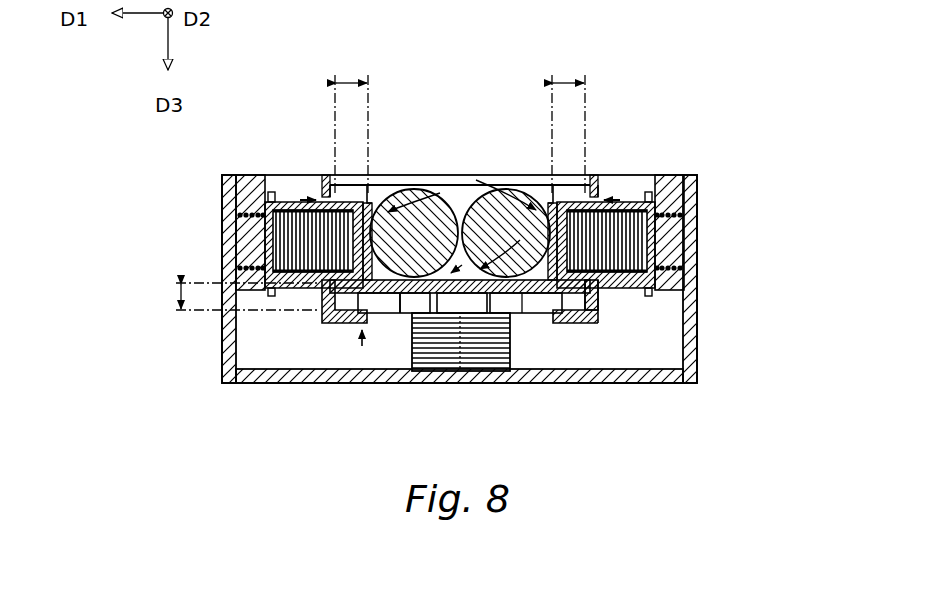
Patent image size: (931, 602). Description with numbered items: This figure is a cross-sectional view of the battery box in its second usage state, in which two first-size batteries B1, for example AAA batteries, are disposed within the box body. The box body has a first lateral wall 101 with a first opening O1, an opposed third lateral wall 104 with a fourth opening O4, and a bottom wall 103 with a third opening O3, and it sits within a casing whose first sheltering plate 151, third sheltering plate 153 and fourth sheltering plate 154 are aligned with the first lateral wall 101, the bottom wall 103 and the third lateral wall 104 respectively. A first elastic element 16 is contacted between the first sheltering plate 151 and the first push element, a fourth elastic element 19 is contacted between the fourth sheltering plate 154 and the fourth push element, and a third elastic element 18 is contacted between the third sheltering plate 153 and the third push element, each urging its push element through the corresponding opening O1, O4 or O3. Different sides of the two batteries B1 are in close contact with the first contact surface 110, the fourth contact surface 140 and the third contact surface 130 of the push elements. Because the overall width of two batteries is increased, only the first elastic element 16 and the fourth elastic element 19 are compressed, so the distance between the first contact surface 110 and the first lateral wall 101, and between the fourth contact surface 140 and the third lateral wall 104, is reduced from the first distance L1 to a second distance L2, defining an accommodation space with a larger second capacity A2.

The first elastic element 16 is at (283, 200).
The fourth elastic element 19 is at (650, 200).
The third elastic element 18 is at (462, 372).
The first contact surface 110 is at (402, 180).
The fourth contact surface 140 is at (517, 180).
The third contact surface 130 is at (524, 293).
The first lateral wall 101 is at (327, 306).
The bottom wall 103 is at (577, 324).
The third lateral wall 104 is at (600, 302).
The first sheltering plate 151 is at (222, 350).
The third sheltering plate 153 is at (393, 378).
The fourth sheltering plate 154 is at (697, 350).
The first opening O1 is at (300, 199).
The third opening O3 is at (402, 312).
The fourth opening O4 is at (620, 199).
The second capacity A2 is at (358, 375).
The first-size batteries B1 is at (440, 193).
The first distance L1 is at (232, 296).
The second distance L2 is at (460, 125).